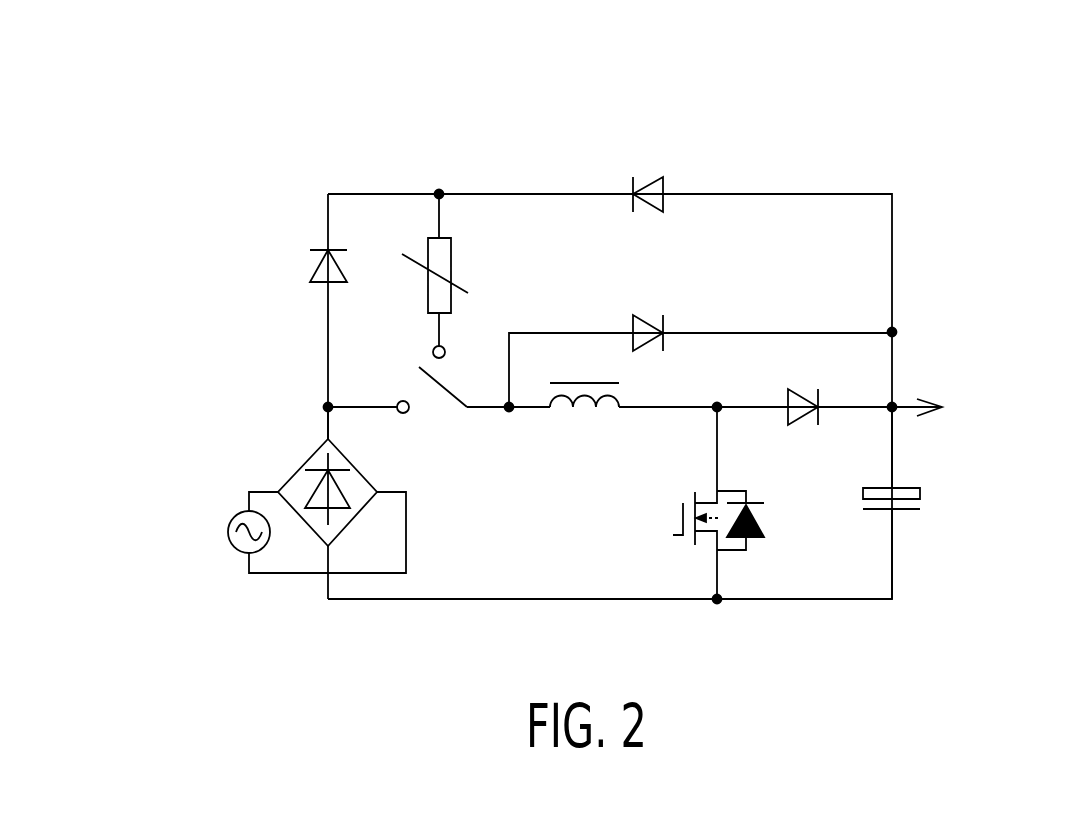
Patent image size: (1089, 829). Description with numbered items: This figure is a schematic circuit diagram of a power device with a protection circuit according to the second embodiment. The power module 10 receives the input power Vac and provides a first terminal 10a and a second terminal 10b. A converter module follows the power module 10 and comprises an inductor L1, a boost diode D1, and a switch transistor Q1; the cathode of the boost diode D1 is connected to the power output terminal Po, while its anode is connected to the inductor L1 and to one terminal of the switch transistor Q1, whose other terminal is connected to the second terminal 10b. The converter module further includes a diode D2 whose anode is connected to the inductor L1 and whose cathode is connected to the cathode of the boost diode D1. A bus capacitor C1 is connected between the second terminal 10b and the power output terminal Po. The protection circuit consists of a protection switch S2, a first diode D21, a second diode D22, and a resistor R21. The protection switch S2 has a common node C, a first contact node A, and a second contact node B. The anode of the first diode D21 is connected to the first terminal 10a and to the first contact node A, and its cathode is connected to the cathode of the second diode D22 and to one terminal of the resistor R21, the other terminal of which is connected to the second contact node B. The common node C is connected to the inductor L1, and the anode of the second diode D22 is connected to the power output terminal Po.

The power module 10 is at (253, 466).
The first terminal 10a is at (300, 433).
The second terminal 10b is at (303, 583).
The input power Vac is at (290, 532).
The first diode D21 is at (301, 269).
The resistor R21 is at (455, 270).
The protection switch S2 is at (397, 406).
The first contact node A is at (393, 391).
The second contact node B is at (451, 349).
The common node C is at (488, 391).
The second diode D22 is at (656, 177).
The diode D2 is at (700, 361).
The inductor L1 is at (613, 416).
The boost diode D1 is at (804, 428).
The switch transistor Q1 is at (701, 503).
The bus capacitor C1 is at (886, 503).
The power output terminal Po is at (942, 407).